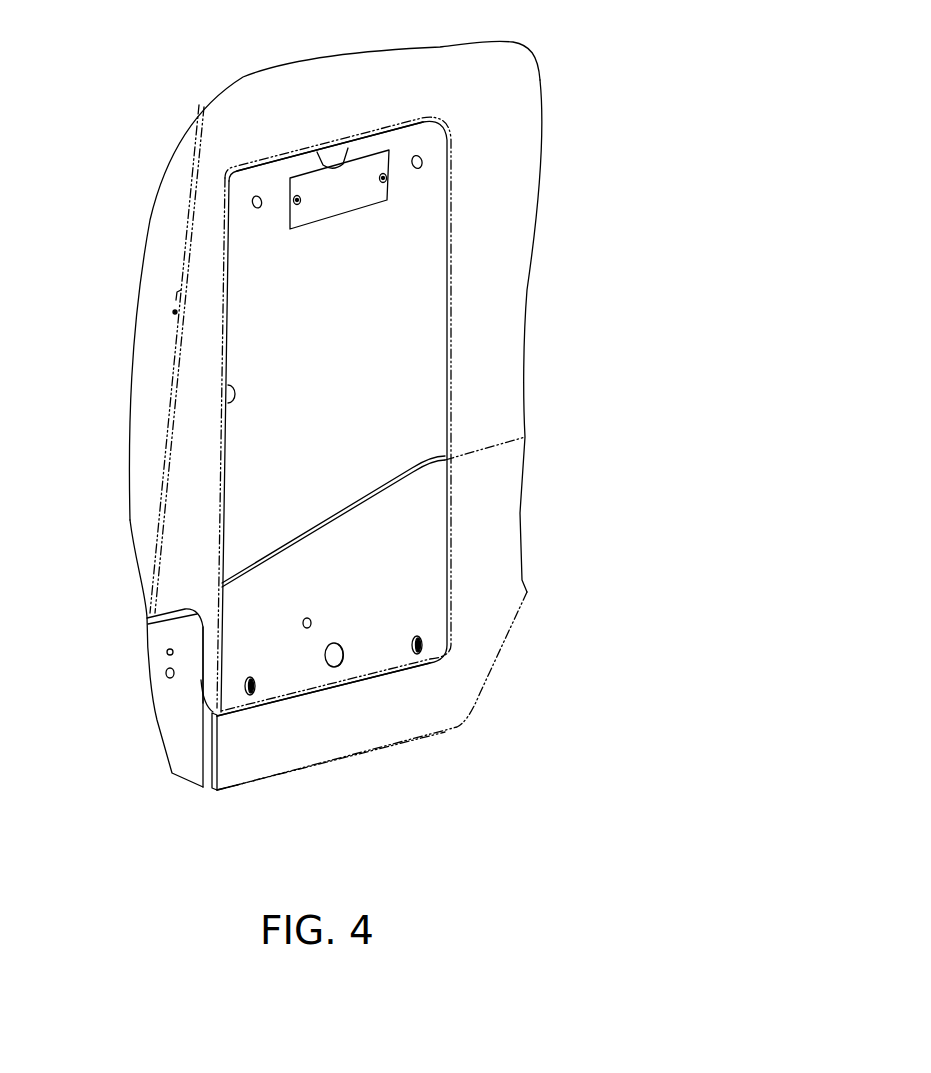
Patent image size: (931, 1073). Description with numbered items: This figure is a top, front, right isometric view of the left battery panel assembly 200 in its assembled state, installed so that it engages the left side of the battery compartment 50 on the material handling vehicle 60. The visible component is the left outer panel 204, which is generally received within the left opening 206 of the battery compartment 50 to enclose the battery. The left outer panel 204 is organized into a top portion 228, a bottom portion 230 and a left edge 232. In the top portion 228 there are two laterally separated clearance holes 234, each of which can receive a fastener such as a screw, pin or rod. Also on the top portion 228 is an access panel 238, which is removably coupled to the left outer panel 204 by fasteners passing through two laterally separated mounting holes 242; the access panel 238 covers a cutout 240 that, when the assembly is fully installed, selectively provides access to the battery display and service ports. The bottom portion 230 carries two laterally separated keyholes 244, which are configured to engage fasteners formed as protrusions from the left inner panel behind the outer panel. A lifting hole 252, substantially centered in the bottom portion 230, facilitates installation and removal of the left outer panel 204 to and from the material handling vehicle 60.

The battery compartment 50 is at (225, 350).
The material handling vehicle 60 is at (257, 118).
The left battery panel assembly 200 is at (490, 272).
The left outer panel 204 is at (418, 372).
The left opening 206 is at (227, 395).
The top portion 228 is at (341, 120).
The bottom portion 230 is at (267, 748).
The left edge 232 is at (200, 706).
The clearance hole 234 is at (253, 203).
The access panel 238 is at (310, 183).
The cutout 240 is at (320, 152).
The mounting hole 242 is at (295, 204).
The keyhole 244 is at (251, 677).
The lifting hole 252 is at (344, 660).